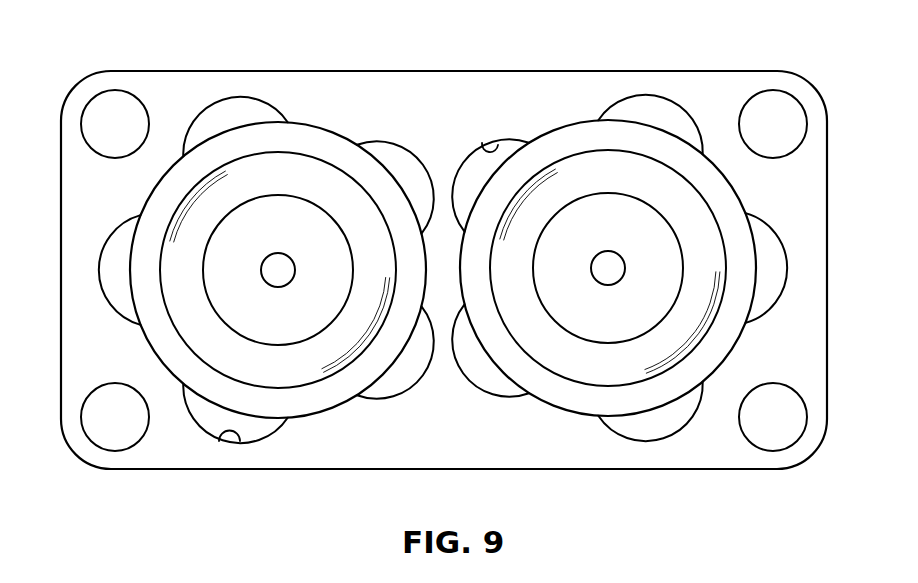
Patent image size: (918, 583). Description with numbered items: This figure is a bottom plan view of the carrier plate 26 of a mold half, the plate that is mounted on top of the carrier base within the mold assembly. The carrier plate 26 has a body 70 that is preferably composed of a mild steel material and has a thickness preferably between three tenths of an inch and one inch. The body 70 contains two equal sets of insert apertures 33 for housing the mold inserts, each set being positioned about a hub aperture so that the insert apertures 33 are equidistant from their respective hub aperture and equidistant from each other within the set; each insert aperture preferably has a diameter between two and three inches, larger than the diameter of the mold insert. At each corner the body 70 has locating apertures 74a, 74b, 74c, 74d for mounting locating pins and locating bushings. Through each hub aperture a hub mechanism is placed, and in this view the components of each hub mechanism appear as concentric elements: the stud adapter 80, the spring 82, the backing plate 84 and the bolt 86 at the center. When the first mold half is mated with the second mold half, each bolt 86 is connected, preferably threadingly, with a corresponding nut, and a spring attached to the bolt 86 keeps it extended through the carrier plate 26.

The carrier plate 26 is at (446, 275).
The insert apertures 33 is at (482, 143).
The body 70 is at (68, 173).
The locating aperture 74a is at (763, 93).
The locating aperture 74b is at (109, 93).
The locating aperture 74c is at (778, 447).
The locating aperture 74d is at (115, 447).
The stud adapter 80 is at (330, 238).
The spring 82 is at (247, 165).
The backing plate 84 is at (557, 138).
The bolt 86 is at (282, 254).